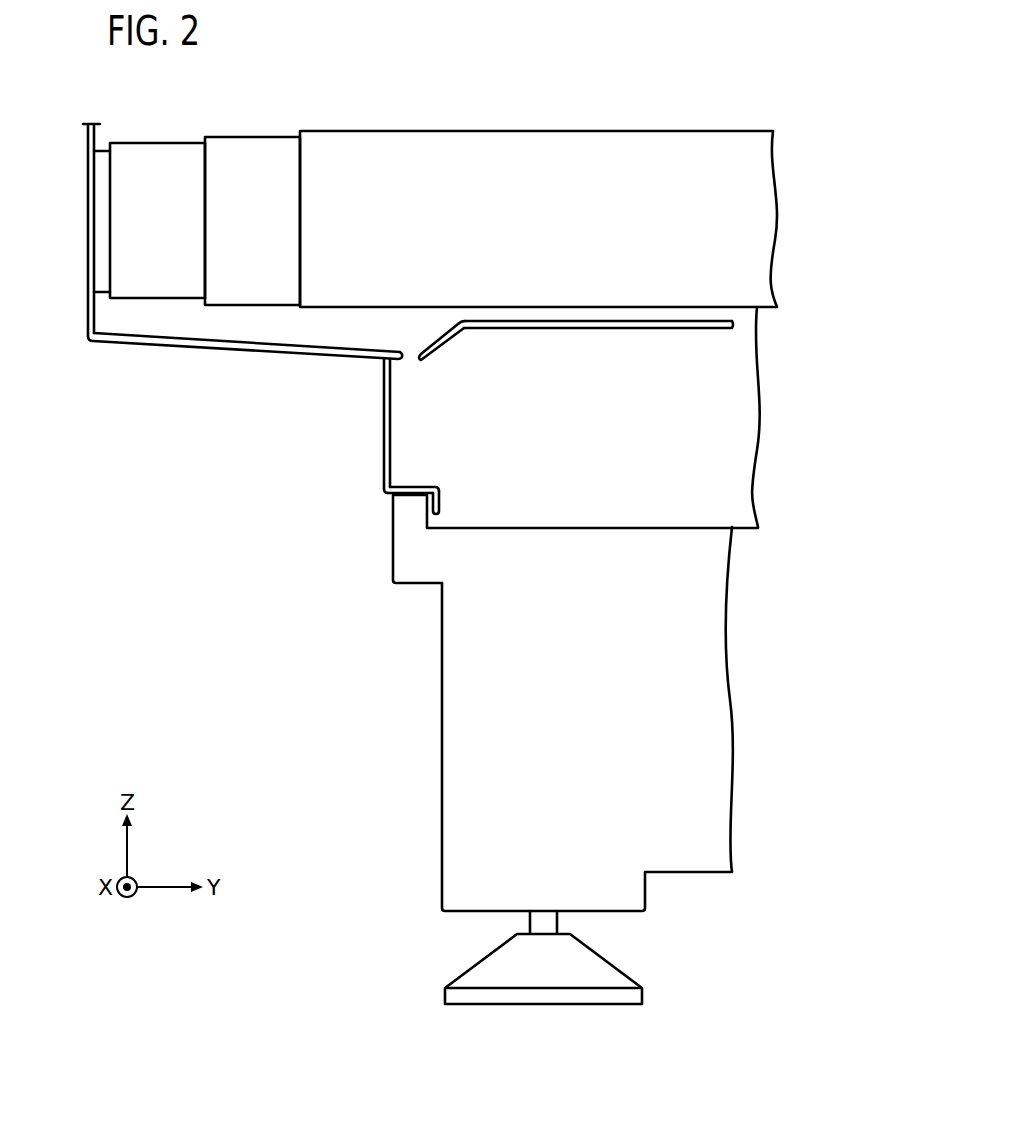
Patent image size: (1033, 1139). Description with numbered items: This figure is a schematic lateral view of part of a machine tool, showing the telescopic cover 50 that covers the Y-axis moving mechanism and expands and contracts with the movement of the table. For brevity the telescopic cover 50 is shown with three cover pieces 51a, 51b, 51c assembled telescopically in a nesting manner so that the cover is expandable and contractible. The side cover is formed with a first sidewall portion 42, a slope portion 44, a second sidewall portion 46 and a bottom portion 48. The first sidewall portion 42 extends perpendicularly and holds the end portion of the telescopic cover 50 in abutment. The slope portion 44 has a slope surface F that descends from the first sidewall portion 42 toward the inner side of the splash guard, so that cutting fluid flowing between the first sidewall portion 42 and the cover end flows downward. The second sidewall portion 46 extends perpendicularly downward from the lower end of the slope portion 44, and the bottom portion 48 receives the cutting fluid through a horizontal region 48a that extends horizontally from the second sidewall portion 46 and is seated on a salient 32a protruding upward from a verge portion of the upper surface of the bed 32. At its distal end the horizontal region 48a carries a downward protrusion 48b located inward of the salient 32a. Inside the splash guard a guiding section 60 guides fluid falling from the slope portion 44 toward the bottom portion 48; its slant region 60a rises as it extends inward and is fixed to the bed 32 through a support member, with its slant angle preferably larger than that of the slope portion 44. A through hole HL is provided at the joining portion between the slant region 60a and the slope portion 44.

The telescopic cover 50 is at (441, 133).
The cover piece 51a is at (101, 186).
The cover piece 51b is at (159, 150).
The cover piece 51c is at (240, 146).
The first sidewall portion 42 is at (87, 255).
The slope portion 44 is at (122, 345).
The slope surface F is at (238, 341).
The second sidewall portion 46 is at (383, 423).
The bottom portion 48 is at (504, 452).
The horizontal region 48a is at (412, 487).
The protrusion 48b is at (443, 505).
The salient 32a is at (398, 525).
The bed 32 is at (455, 678).
The guiding section 60 is at (600, 329).
The slant region 60a is at (443, 348).
The through hole HL is at (411, 370).